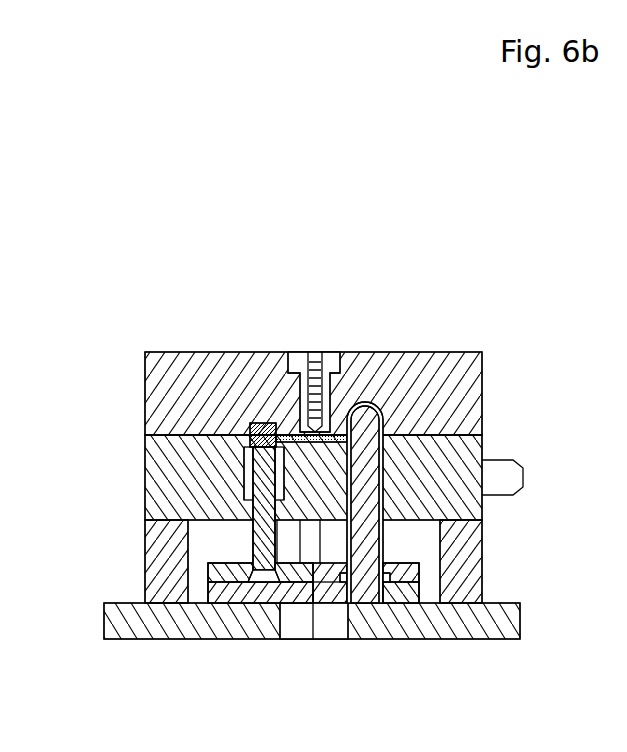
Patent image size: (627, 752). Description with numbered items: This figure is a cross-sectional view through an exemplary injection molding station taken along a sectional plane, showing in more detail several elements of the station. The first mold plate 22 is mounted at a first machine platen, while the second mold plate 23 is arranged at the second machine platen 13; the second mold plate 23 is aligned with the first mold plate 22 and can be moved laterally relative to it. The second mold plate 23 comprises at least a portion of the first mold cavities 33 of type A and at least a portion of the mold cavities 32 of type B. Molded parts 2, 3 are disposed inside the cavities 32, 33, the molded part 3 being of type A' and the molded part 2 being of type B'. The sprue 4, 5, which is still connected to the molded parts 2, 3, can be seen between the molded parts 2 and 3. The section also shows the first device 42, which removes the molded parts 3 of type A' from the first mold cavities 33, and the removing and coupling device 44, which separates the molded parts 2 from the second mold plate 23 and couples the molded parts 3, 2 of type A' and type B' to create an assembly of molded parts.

The molded part 2 is at (246, 436).
The molded part 3 is at (463, 434).
The sprue 4 is at (258, 453).
The sprue 5 is at (383, 472).
The second machine platen 13 is at (513, 605).
The first mold plate 22 is at (468, 401).
The second mold plate 23 is at (470, 452).
The mold cavity 32 is at (258, 418).
The first mold cavity 33 is at (371, 398).
The first device 42 is at (398, 582).
The removing and coupling device 44 is at (237, 583).